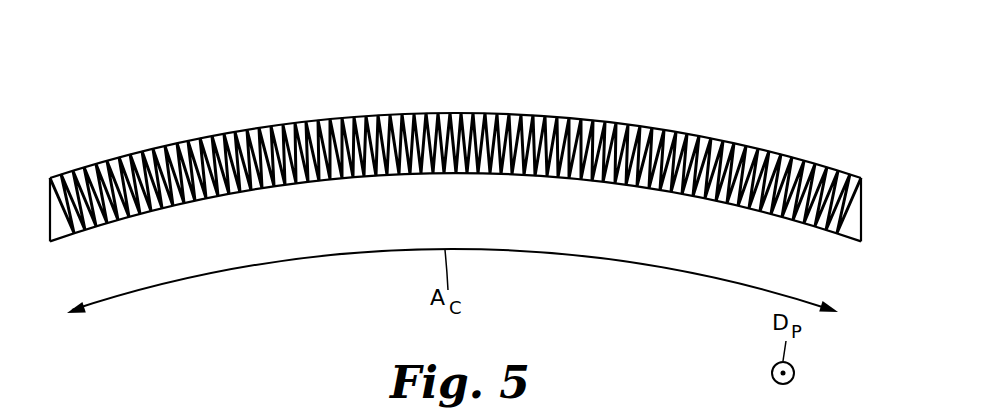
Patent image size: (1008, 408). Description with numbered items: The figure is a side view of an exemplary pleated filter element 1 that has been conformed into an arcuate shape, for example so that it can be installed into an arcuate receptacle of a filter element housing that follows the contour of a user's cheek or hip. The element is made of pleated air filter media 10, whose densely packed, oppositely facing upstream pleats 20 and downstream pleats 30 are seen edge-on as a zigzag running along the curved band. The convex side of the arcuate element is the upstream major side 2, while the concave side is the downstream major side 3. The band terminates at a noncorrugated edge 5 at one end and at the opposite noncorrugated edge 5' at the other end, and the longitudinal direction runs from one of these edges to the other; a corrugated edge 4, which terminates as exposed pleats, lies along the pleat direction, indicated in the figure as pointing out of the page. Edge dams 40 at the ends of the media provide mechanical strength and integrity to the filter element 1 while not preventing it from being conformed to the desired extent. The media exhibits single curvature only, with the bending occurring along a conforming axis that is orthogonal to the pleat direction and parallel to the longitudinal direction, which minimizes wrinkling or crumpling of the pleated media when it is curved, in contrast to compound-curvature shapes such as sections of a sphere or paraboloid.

The pleated filter element 1 is at (813, 48).
The upstream major side 2 is at (505, 88).
The downstream major side 3 is at (503, 195).
The corrugated edge 4 is at (663, 183).
The noncorrugated edge 5 is at (39, 179).
The noncorrugated edge 5' is at (876, 184).
The pleated air filter media 10 is at (443, 113).
The upstream pleat 20 is at (652, 128).
The downstream pleat 30 is at (272, 188).
The edge dam 40 is at (72, 225).